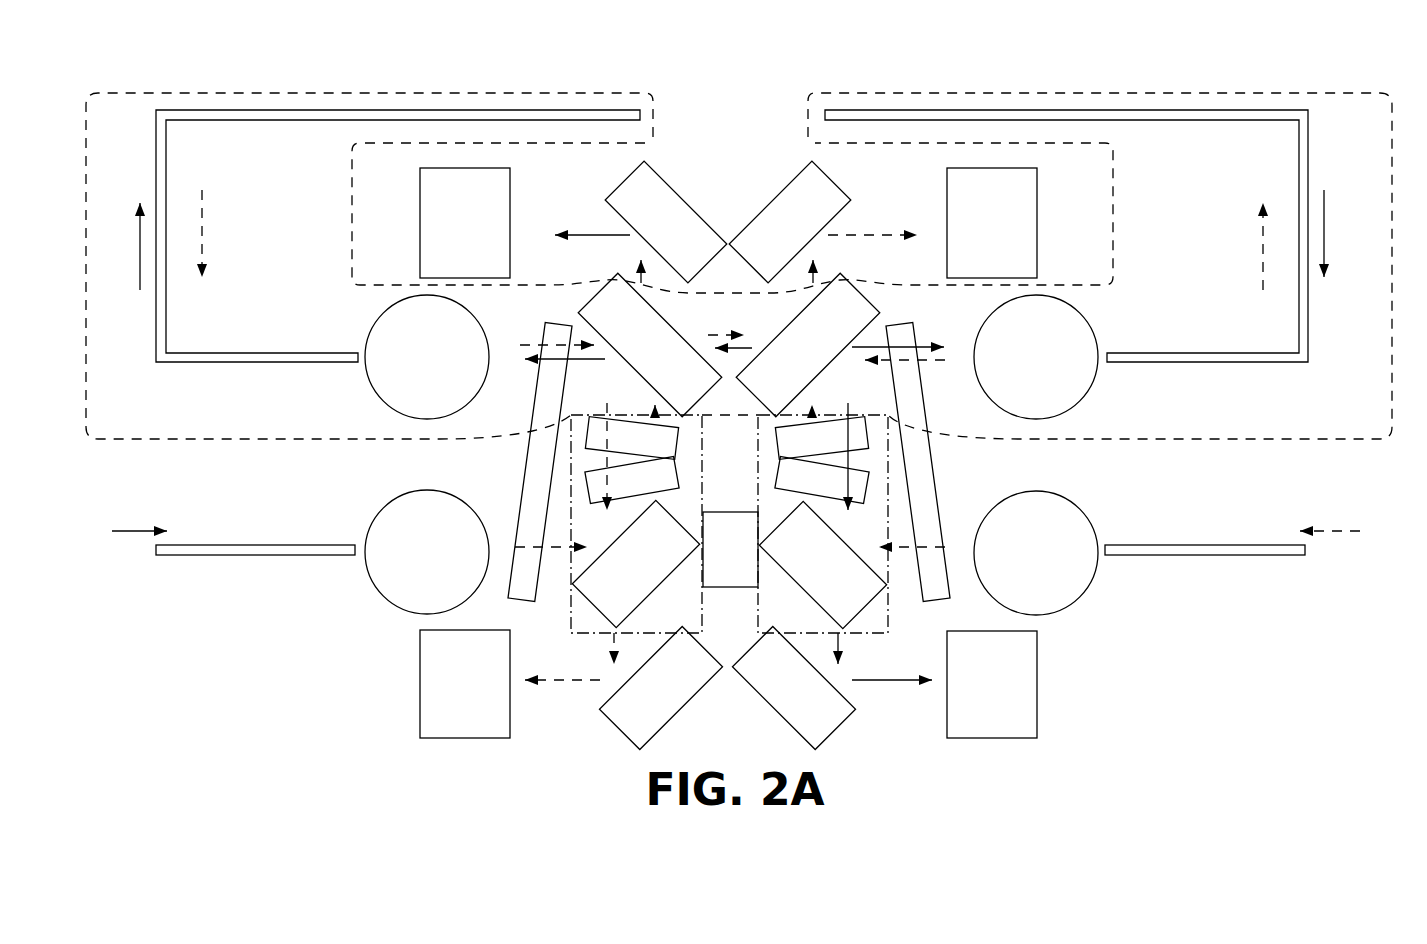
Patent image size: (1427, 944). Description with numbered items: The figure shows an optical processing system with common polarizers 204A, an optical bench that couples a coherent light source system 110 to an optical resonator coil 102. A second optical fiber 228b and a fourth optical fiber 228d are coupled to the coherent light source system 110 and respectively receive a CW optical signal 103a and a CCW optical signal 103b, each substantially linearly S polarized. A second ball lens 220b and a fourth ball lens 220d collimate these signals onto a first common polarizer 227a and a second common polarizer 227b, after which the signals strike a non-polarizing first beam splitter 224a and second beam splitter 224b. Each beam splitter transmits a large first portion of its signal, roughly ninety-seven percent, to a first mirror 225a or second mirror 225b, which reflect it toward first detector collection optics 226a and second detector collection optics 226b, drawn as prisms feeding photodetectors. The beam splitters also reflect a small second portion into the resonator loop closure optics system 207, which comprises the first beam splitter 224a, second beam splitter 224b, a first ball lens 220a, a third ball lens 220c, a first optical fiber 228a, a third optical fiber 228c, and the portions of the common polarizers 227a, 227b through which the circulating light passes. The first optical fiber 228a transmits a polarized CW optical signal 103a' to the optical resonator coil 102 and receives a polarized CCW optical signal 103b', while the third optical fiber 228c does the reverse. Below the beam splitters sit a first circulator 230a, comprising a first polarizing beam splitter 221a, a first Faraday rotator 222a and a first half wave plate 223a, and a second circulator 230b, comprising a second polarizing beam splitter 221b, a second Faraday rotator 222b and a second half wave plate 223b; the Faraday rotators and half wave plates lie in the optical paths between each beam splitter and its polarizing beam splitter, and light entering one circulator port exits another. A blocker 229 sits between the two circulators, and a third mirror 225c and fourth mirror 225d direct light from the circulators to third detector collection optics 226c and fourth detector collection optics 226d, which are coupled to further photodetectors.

The optical processing system with common polarizers 204A is at (527, 234).
The resonator loop closure optics system 207 is at (1158, 93).
The optical resonator coil 102 is at (737, 140).
The CW optical signal 103a is at (146, 510).
The CCW optical signal 103b is at (1323, 510).
The polarized CW optical signal 103a' is at (736, 240).
The polarized CCW optical signal 103b' is at (732, 240).
The coherent light source system 110 is at (744, 642).
The first ball lens 220a is at (427, 357).
The second ball lens 220b is at (427, 552).
The third ball lens 220c is at (1036, 357).
The fourth ball lens 220d is at (1036, 553).
The first polarizing beam splitter 221a is at (607, 515).
The second polarizing beam splitter 221b is at (852, 516).
The first Faraday rotator 222a is at (632, 479).
The second Faraday rotator 222b is at (822, 479).
The first half wave plate 223a is at (631, 438).
The second half wave plate 223b is at (821, 438).
The first beam splitter 224a is at (621, 345).
The second beam splitter 224b is at (826, 345).
The first mirror 225a is at (666, 222).
The second mirror 225b is at (790, 222).
The third mirror 225c is at (660, 687).
The fourth mirror 225d is at (793, 687).
The first detector collection optics 226a is at (525, 223).
The second detector collection optics 226b is at (932, 223).
The third detector collection optics 226c is at (510, 684).
The fourth detector collection optics 226d is at (944, 684).
The first common polarizer 227a is at (540, 461).
The second common polarizer 227b is at (918, 461).
The first optical fiber 228a is at (398, 260).
The second optical fiber 228b is at (255, 565).
The third optical fiber 228c is at (1066, 261).
The fourth optical fiber 228d is at (1205, 565).
The blocker 229 is at (730, 549).
The first circulator 230a is at (636, 524).
The second circulator 230b is at (823, 524).